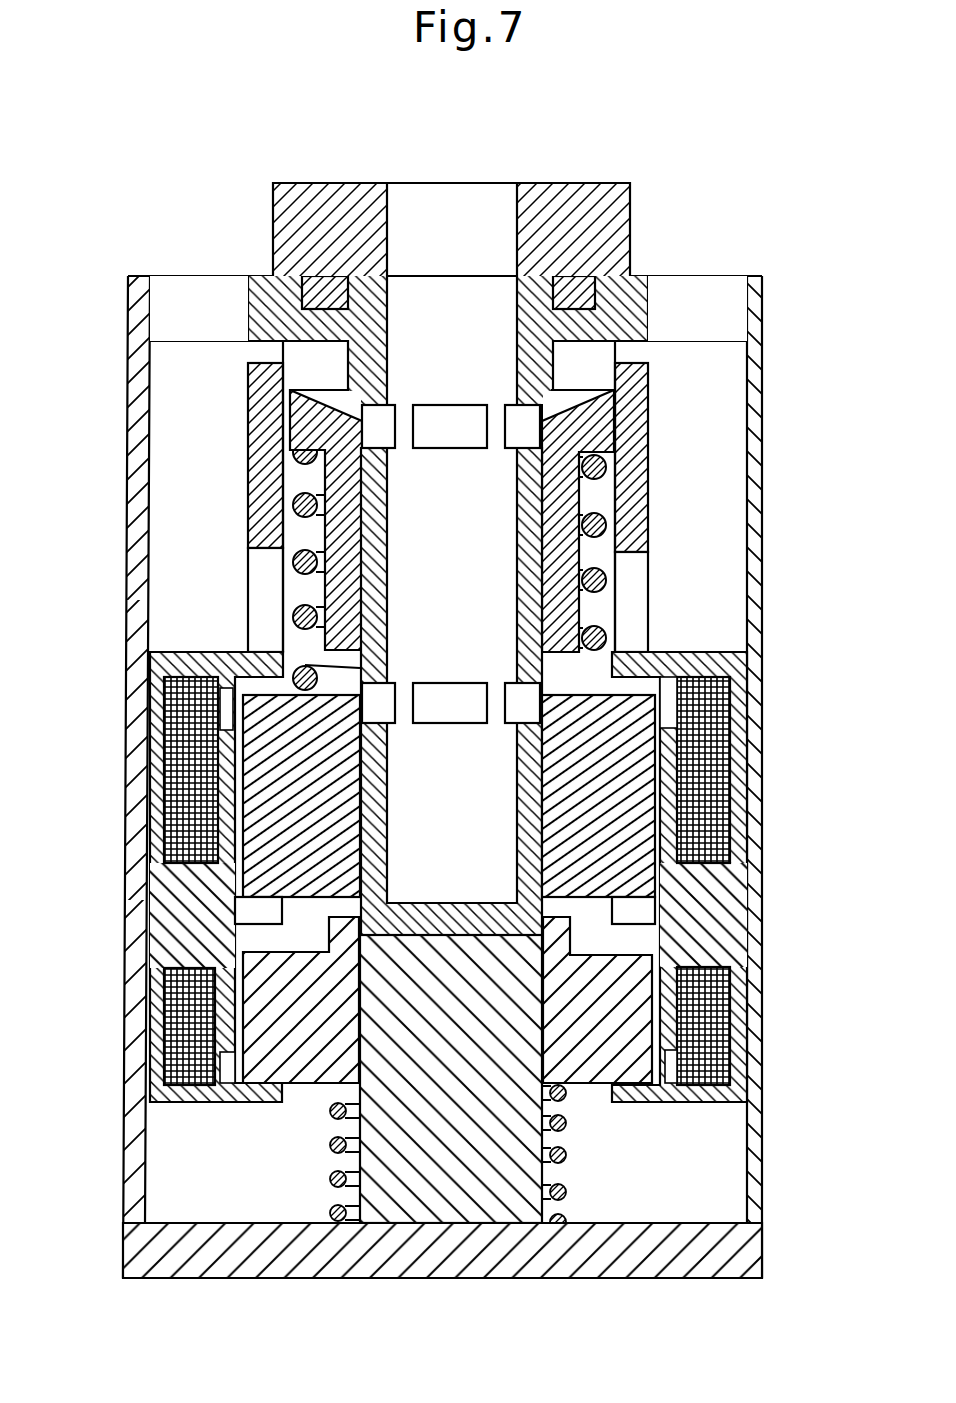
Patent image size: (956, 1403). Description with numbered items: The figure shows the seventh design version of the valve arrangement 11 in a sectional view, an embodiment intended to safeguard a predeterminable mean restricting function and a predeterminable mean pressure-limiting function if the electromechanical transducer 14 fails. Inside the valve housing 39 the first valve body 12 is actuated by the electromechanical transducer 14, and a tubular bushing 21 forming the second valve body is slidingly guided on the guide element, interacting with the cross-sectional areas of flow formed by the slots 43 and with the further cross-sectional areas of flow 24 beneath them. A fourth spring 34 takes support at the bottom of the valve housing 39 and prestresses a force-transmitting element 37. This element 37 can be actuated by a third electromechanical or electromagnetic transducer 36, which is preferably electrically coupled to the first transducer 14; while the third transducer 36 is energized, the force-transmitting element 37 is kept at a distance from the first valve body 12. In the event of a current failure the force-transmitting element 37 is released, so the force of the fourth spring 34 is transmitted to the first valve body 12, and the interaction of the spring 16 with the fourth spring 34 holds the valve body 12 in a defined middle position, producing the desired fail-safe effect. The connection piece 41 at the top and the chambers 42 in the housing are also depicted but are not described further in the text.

The valve arrangement 11 is at (106, 258).
The first valve body 12 is at (250, 787).
The electromechanical transducer 14 is at (132, 720).
The spring 16 is at (293, 497).
The tubular bushing 21 is at (593, 433).
The cross-sectional areas of flow 24 is at (512, 690).
The fourth spring 34 is at (330, 1144).
The third electromechanical transducer 36 is at (136, 998).
The force-transmitting element 37 is at (590, 1058).
The valve housing 39 is at (438, 1248).
The connection piece 41 is at (477, 210).
The annular chamber 42 is at (714, 293).
The slots 43 is at (508, 410).